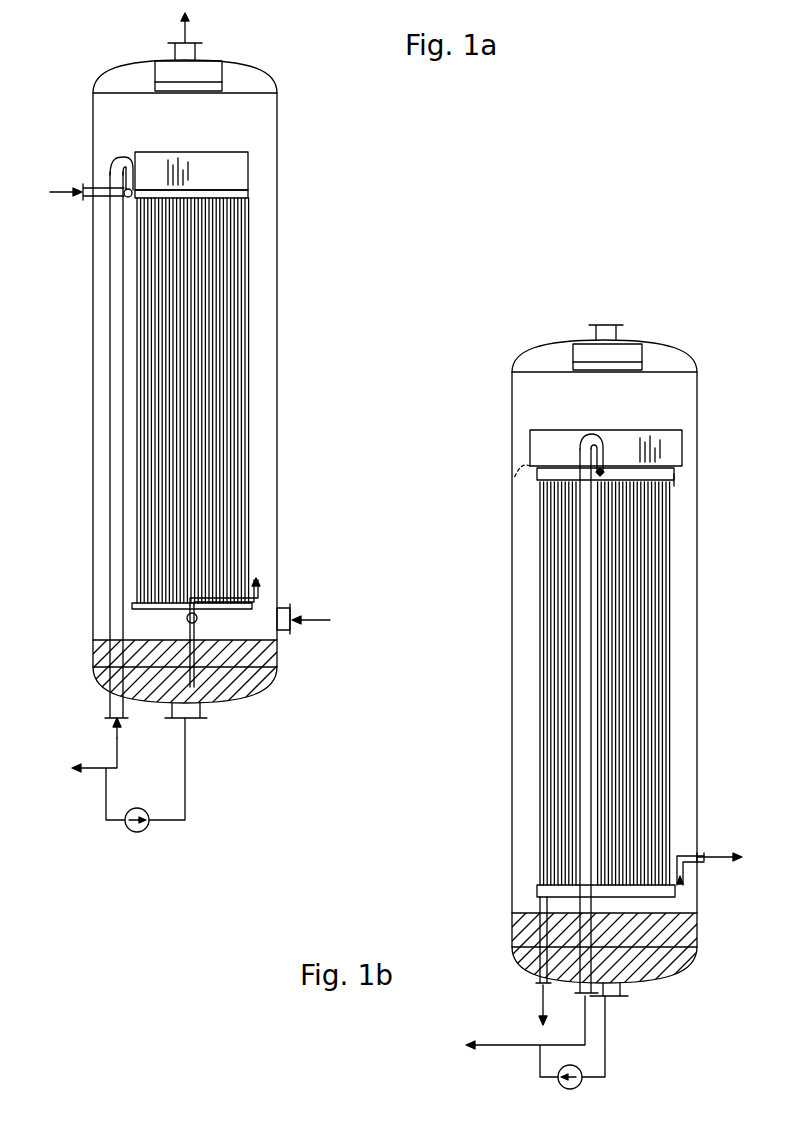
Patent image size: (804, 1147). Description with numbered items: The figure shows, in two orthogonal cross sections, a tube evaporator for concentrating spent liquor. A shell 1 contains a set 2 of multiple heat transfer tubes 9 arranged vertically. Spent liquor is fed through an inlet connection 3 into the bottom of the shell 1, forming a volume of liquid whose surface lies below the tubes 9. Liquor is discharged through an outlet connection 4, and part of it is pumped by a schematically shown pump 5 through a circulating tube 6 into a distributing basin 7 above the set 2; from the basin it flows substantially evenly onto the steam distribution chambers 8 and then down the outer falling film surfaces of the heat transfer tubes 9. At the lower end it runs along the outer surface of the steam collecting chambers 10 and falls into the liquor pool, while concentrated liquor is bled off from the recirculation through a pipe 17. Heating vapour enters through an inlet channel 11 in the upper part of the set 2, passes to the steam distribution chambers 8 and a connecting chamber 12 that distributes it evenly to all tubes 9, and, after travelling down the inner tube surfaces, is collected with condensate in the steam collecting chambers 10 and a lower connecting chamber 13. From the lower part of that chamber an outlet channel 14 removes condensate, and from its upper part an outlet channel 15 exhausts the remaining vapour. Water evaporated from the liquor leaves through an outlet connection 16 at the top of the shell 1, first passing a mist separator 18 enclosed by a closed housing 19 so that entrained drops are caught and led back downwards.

In FIG. 1A, the shell 1 is at (277, 255).
In FIG. 1B, the shell 1 is at (697, 642).
In FIG. 1A, the set 2 is at (228, 403).
In FIG. 1B, the set 2 is at (634, 689).
In FIG. 1A, the inlet connection 3 is at (292, 630).
In FIG. 1A, the outlet connection 4 is at (203, 712).
In FIG. 1B, the outlet connection 4 is at (625, 990).
In FIG. 1A, the pump 5 is at (143, 815).
In FIG. 1B, the pump 5 is at (582, 1072).
In FIG. 1A, the circulating tube 6 is at (108, 712).
In FIG. 1B, the circulating tube 6 is at (580, 988).
In FIG. 1A, the distributing basin 7 is at (248, 182).
In FIG. 1B, the distributing basin 7 is at (548, 447).
In FIG. 1A, the steam distribution chambers 8 is at (248, 195).
In FIG. 1B, the steam distribution chambers 8 is at (605, 474).
In FIG. 1A, the heat transfer tubes 9 is at (248, 292).
In FIG. 1B, the heat transfer tubes 9 is at (671, 592).
In FIG. 1A, the steam collecting chambers 10 is at (258, 605).
In FIG. 1B, the steam collecting chambers 10 is at (698, 888).
In FIG. 1A, the inlet channel 11 is at (100, 198).
In FIG. 1B, the inlet channel 11 is at (605, 470).
In FIG. 1A, the connecting chamber 12 is at (124, 190).
In FIG. 1B, the connecting chamber 12 is at (680, 480).
In FIG. 1A, the lower connecting chamber 13 is at (196, 618).
In FIG. 1B, the lower connecting chamber 13 is at (538, 890).
In FIG. 1A, the outlet channel for condensate 14 is at (187, 618).
In FIG. 1B, the outlet channel for condensate 14 is at (540, 976).
In FIG. 1A, the outlet channel for vapour 15 is at (260, 580).
In FIG. 1B, the outlet channel for vapour 15 is at (506, 465).
In FIG. 1A, the outlet connection 16 is at (200, 54).
In FIG. 1B, the outlet connection 16 is at (618, 336).
In FIG. 1A, the pipe 17 is at (100, 772).
In FIG. 1B, the pipe 17 is at (508, 1046).
In FIG. 1A, the mist separator 18 is at (277, 93).
In FIG. 1B, the mist separator 18 is at (697, 372).
In FIG. 1A, the closed housing 19 is at (222, 74).
In FIG. 1B, the closed housing 19 is at (642, 352).